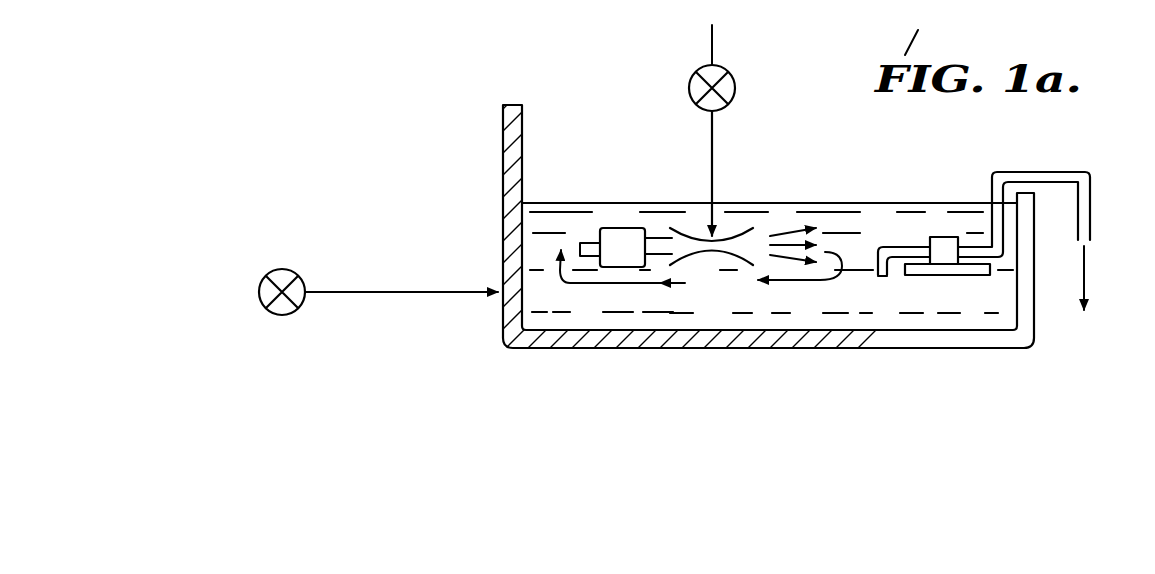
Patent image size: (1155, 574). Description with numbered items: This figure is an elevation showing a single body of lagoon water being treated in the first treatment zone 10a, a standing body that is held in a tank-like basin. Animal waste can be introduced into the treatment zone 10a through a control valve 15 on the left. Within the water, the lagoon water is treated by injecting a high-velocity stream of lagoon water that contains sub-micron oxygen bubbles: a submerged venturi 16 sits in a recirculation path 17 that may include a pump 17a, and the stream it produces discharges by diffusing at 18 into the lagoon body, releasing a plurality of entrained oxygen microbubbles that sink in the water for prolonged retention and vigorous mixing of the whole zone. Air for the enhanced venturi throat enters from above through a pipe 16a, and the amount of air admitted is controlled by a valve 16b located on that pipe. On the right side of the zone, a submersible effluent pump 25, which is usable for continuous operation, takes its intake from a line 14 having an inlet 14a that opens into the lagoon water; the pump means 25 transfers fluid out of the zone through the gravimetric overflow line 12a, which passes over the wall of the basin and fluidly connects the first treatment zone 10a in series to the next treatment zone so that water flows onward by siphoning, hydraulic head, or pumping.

The treatment zone 10a is at (588, 300).
The control valve 15 is at (282, 316).
The valve 16b is at (689, 88).
The pipe 16a is at (712, 152).
The submerged venturi 16 is at (710, 267).
The pump 17a is at (617, 228).
The recirculation path 17 is at (807, 283).
The diffusing discharge 18 is at (787, 230).
The line 14 is at (890, 250).
The inlet 14a is at (883, 278).
The pump means 25 is at (942, 237).
The overflow line 12a is at (1040, 170).